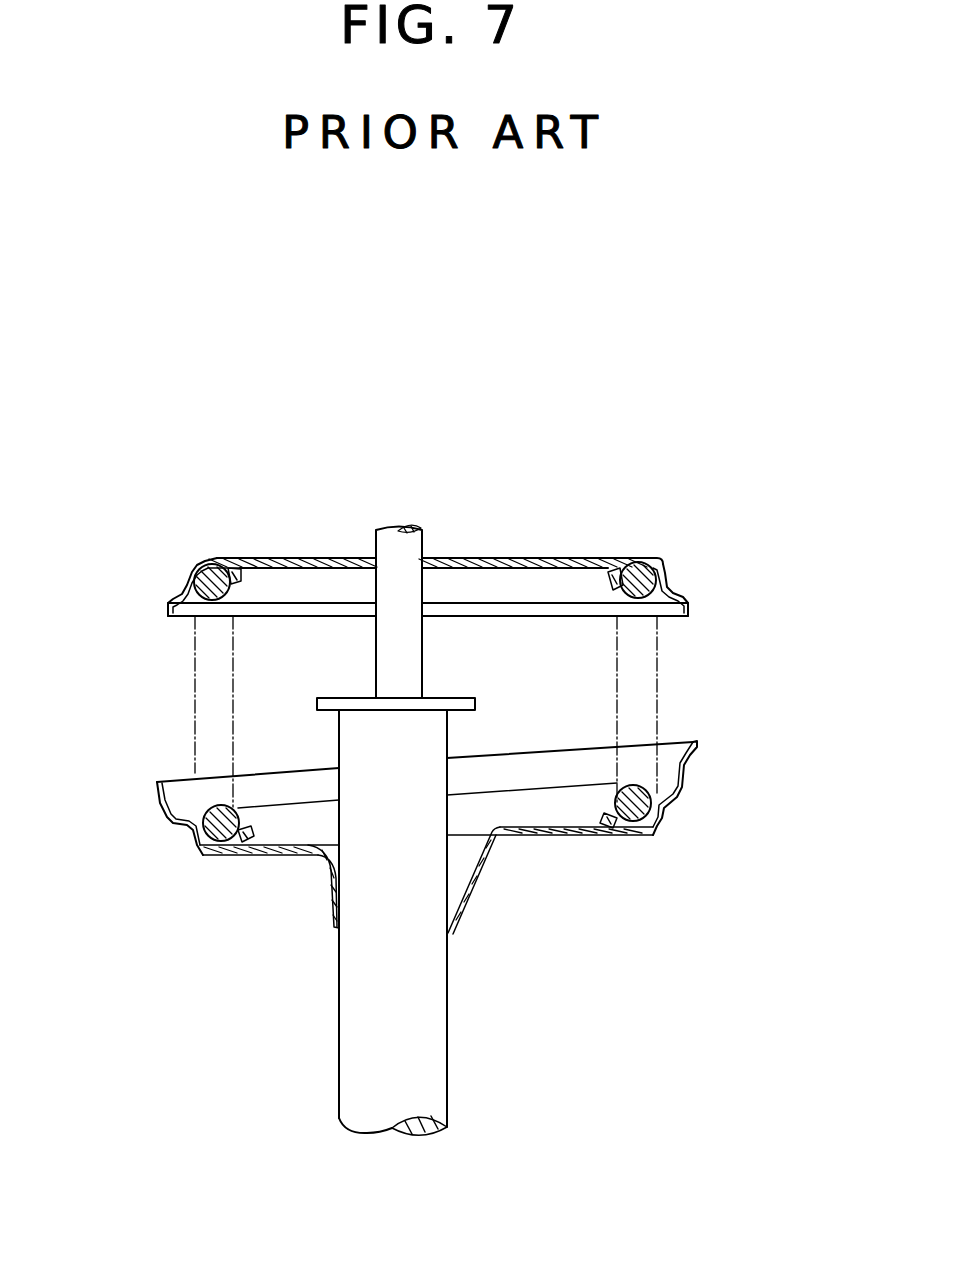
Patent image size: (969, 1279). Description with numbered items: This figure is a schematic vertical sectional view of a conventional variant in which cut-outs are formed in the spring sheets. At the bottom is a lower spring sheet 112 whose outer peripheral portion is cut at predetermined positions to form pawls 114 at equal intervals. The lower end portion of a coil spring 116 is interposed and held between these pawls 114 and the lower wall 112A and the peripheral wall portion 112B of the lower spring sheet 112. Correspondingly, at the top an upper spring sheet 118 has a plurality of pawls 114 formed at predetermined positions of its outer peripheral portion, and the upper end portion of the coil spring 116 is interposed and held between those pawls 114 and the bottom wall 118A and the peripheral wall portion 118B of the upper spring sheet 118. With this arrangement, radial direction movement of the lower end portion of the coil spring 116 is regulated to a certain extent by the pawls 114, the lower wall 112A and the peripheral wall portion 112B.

The lower spring sheet 112 is at (697, 735).
The lower wall 112A is at (220, 852).
The peripheral wall portion 112B is at (665, 812).
The pawls 114 is at (238, 843).
The coil spring 116 is at (200, 707).
The upper spring sheet 118 is at (520, 558).
The bottom wall 118A is at (220, 562).
The peripheral wall portion 118B is at (188, 566).